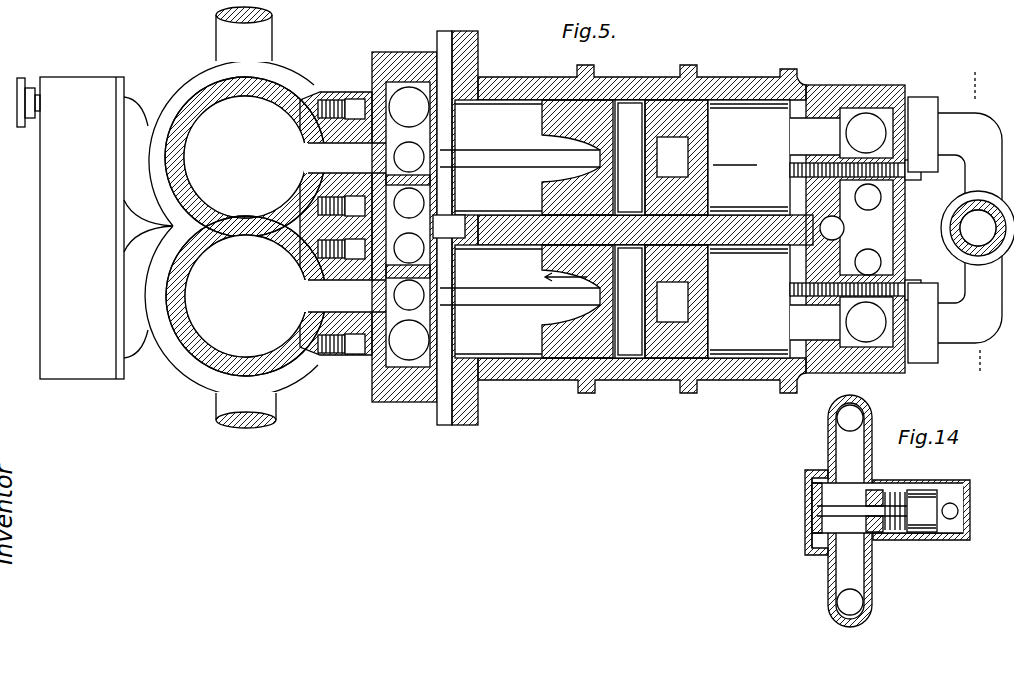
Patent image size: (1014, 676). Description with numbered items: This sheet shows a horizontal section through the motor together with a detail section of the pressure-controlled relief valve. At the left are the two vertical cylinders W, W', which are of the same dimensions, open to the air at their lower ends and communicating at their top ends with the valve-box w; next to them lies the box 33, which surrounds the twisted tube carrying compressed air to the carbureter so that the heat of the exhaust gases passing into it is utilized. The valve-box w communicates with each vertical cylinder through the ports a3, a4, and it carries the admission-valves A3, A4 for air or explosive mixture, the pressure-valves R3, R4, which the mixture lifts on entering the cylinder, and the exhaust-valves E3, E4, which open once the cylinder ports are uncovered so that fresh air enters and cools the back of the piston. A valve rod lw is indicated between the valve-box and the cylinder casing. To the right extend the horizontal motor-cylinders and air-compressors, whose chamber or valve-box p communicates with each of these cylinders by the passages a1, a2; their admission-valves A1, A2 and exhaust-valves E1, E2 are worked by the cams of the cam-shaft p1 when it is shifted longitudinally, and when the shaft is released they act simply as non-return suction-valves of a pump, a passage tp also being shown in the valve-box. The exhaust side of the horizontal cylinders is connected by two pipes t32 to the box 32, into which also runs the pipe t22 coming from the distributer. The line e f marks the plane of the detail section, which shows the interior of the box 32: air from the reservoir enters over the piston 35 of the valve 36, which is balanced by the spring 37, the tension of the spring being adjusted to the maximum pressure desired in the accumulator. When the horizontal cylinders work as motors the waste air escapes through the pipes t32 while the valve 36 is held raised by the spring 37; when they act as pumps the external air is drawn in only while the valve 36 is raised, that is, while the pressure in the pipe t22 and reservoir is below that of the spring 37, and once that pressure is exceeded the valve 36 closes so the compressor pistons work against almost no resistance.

In FIG. 5, the box 33 is at (95, 228).
In FIG. 5, the vertical cylinder W is at (237, 149).
In FIG. 5, the vertical cylinder W' is at (235, 306).
In FIG. 5, the valve-box w is at (404, 217).
In FIG. 5, the exhaust-valve E4 is at (409, 107).
In FIG. 5, the pressure-valve R4 is at (409, 157).
In FIG. 5, the admission-valve A4 is at (409, 203).
In FIG. 5, the admission-valve A3 is at (409, 248).
In FIG. 5, the pressure-valve R3 is at (409, 295).
In FIG. 5, the exhaust-valve E3 is at (409, 340).
In FIG. 5, the port a4 is at (345, 158).
In FIG. 5, the port a3 is at (345, 296).
In FIG. 5, the valve rod lw is at (449, 226).
In FIG. 5, the valve-box p is at (737, 80).
In FIG. 5, the shaft p1 is at (738, 382).
In FIG. 5, the passage a2 is at (815, 136).
In FIG. 5, the passage a1 is at (815, 322).
In FIG. 5, the exhaust-valve E2 is at (866, 133).
In FIG. 5, the exhaust-valve E1 is at (866, 322).
In FIG. 5, the admission-valve A2 is at (868, 197).
In FIG. 5, the admission-valve A1 is at (868, 262).
In FIG. 5, the valve passage tp is at (832, 228).
In FIG. 5, the section line e is at (973, 75).
In FIG. 5, the section line f is at (979, 373).
In FIG. 5, the box 32 is at (977, 228).
In FIG. 5, the pipe t32 is at (970, 228).
In FIG. 14, the pipe t32 is at (858, 414).
In FIG. 14, the valve 36 is at (812, 508).
In FIG. 14, the spring 37 is at (895, 536).
In FIG. 14, the piston 35 is at (922, 511).
In FIG. 14, the pipe t22 is at (958, 511).